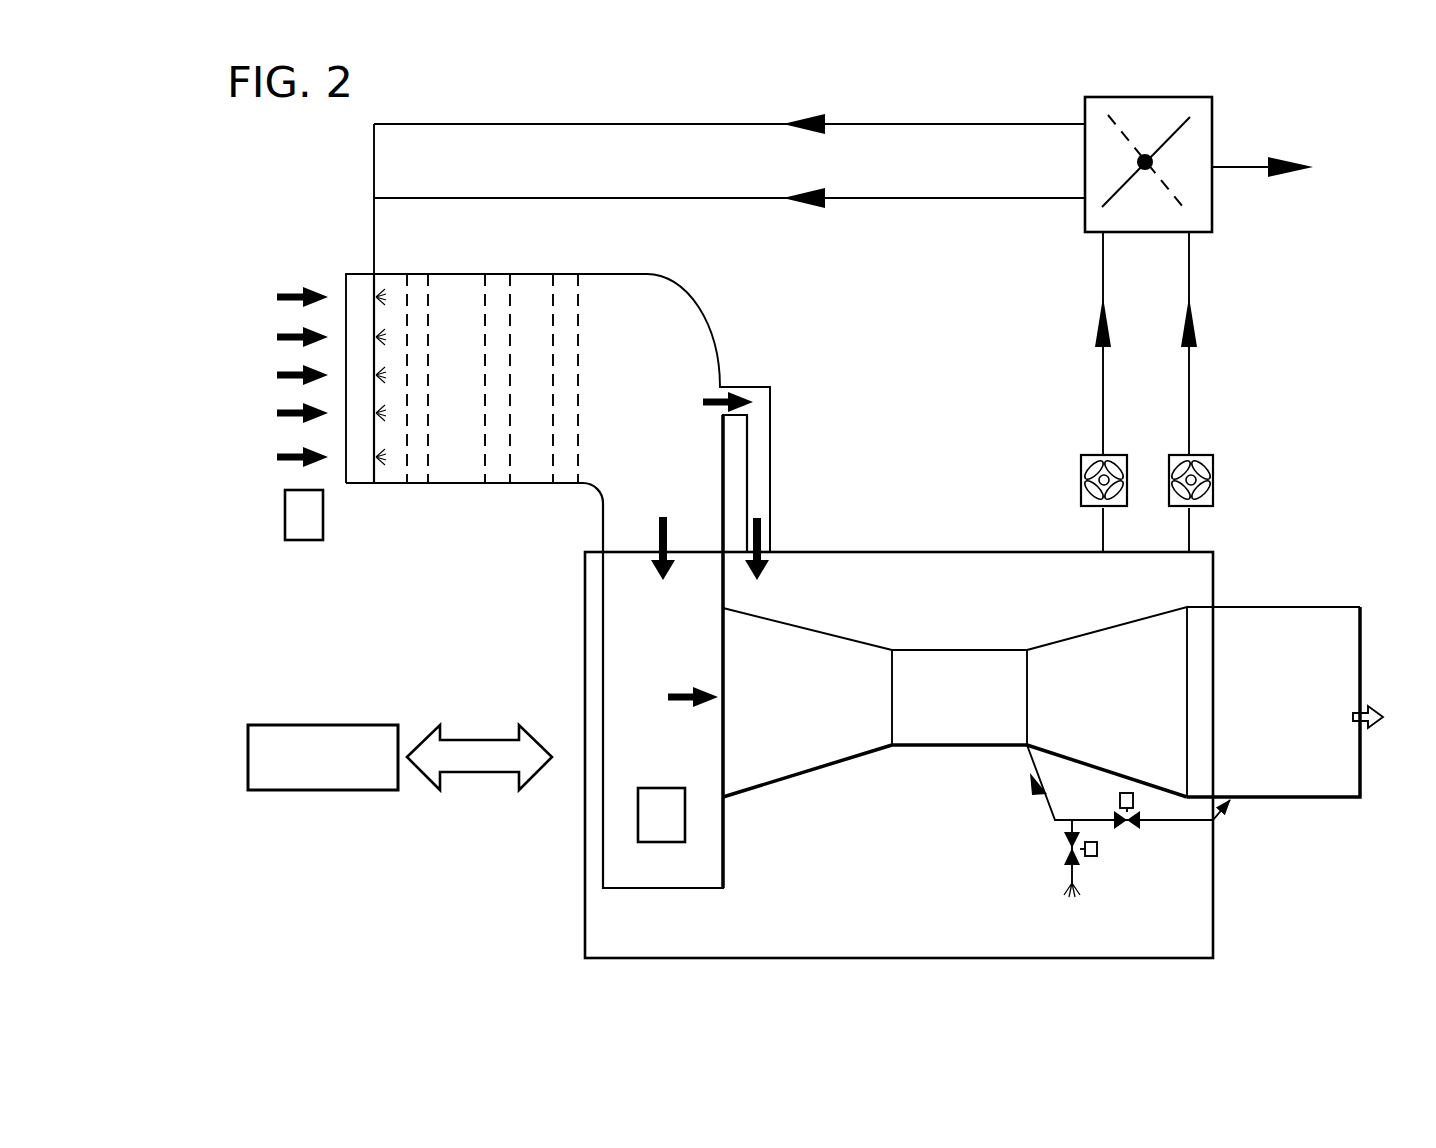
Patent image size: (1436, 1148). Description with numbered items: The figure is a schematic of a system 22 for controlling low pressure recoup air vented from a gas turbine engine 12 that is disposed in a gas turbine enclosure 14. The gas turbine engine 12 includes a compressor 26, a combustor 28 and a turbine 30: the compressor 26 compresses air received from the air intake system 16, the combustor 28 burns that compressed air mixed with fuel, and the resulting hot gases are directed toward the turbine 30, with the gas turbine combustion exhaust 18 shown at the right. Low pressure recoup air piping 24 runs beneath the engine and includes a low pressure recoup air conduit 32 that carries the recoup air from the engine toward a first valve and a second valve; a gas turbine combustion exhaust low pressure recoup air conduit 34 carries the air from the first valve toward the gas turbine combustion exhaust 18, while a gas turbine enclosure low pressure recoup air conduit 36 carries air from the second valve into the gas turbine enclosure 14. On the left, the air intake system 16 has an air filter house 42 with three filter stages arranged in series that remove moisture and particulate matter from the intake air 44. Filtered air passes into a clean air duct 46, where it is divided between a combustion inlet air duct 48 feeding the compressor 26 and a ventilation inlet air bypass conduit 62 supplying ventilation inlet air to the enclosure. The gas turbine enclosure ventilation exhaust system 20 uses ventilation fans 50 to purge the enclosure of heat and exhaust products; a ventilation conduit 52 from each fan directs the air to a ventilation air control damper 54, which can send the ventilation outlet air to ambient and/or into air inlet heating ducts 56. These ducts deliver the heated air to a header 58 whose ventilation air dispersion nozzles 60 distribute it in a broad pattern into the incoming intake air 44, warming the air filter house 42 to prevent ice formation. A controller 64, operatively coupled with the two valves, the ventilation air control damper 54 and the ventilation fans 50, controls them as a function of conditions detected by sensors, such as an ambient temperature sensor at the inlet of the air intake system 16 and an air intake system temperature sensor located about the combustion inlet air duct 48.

The gas turbine engine 12 is at (912, 745).
The gas turbine enclosure 14 is at (1213, 563).
The air intake system 16 is at (275, 573).
The gas turbine combustion exhaust 18 is at (1307, 628).
The gas turbine enclosure ventilation exhaust system 20 is at (1023, 370).
The system 22 is at (235, 203).
The low pressure recoup air piping 24 is at (1127, 893).
The compressor 26 is at (793, 716).
The combustor 28 is at (946, 716).
The turbine 30 is at (1088, 714).
The low pressure recoup air conduit 32 is at (1052, 815).
The gas turbine combustion exhaust low pressure recoup air conduit 34 is at (1170, 822).
The gas turbine enclosure low pressure recoup air conduit 36 is at (1065, 877).
The air filter house 42 is at (450, 570).
The intake air 44 is at (260, 355).
The clean air duct 46 is at (693, 303).
The combustion inlet air duct 48 is at (603, 652).
The ventilation fans 50 is at (1168, 455).
The ventilation conduit 52 is at (1103, 260).
The ventilation air control damper 54 is at (1212, 195).
The air inlet heating ducts 56 is at (650, 198).
The header 58 is at (372, 288).
The ventilation air dispersion nozzles 60 is at (373, 462).
The ventilation inlet air bypass conduit 62 is at (770, 445).
The controller 64 is at (247, 770).